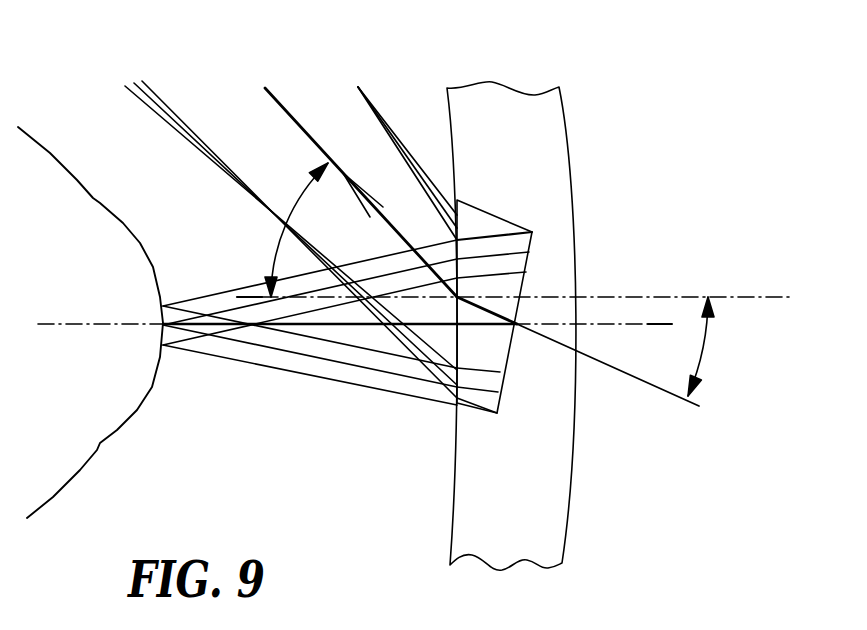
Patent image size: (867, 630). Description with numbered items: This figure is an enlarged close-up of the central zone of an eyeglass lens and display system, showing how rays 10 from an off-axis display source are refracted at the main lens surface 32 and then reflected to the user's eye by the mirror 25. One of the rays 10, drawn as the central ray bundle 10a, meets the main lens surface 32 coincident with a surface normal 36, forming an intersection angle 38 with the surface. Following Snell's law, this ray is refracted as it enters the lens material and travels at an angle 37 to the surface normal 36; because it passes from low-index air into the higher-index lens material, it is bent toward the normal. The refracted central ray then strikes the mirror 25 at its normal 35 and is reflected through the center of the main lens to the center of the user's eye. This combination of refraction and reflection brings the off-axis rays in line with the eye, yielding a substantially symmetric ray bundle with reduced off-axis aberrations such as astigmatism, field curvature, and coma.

The rays 10 is at (281, 104).
The central ray bundle 10a is at (387, 228).
The mirror 25 is at (532, 236).
The main lens surface 32 is at (455, 455).
The normal 35 is at (657, 322).
The surface normal 36 is at (245, 295).
The angle 37 is at (704, 343).
The intersection angle 38 is at (298, 220).